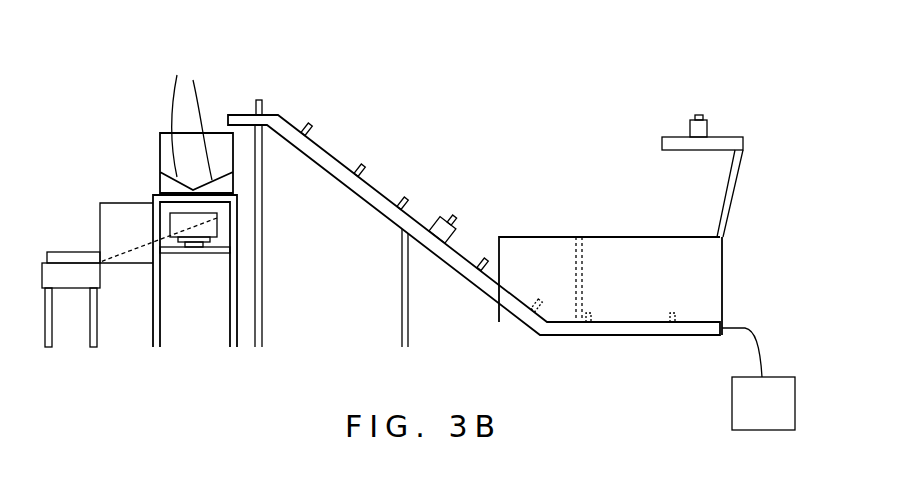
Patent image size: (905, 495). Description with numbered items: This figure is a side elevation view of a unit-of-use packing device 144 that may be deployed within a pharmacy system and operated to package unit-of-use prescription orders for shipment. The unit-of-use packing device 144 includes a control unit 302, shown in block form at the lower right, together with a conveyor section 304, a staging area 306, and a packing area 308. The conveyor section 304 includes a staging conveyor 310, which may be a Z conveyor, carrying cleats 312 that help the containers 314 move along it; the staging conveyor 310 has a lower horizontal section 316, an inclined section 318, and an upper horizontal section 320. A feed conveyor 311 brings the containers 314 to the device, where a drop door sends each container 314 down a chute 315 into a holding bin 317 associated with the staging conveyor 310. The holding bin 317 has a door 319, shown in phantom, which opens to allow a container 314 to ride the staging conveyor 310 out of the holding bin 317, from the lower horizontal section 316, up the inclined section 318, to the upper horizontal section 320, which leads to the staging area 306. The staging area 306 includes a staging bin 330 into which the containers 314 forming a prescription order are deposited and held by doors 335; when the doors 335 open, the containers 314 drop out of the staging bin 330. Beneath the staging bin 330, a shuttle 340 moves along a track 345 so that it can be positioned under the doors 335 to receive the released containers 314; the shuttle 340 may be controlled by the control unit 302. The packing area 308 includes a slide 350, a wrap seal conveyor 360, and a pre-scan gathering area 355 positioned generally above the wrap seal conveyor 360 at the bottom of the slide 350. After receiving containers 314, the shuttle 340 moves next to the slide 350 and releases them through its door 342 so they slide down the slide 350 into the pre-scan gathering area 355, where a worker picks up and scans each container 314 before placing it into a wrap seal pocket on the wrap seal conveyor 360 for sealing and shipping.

The unit-of-use packing device 144 is at (627, 100).
The control unit 302 is at (780, 417).
The conveyor section 304 is at (463, 160).
The staging area 306 is at (205, 80).
The packing area 308 is at (105, 173).
The staging conveyor 310 is at (472, 280).
The feed conveyor 311 is at (733, 138).
The cleats 312 is at (367, 170).
The containers 314 is at (438, 213).
The chute 315 is at (740, 175).
The lower horizontal section 316 is at (603, 335).
The holding bin 317 is at (703, 275).
The inclined section 318 is at (383, 213).
The door 319 is at (573, 263).
The upper horizontal section 320 is at (243, 120).
The staging bin 330 is at (160, 150).
The doors 335 is at (177, 75).
The shuttle 340 is at (217, 218).
The door 342 is at (170, 228).
The track 345 is at (217, 240).
The slide 350 is at (140, 257).
The pre-scan gathering area 355 is at (82, 252).
The wrap seal conveyor 360 is at (93, 278).